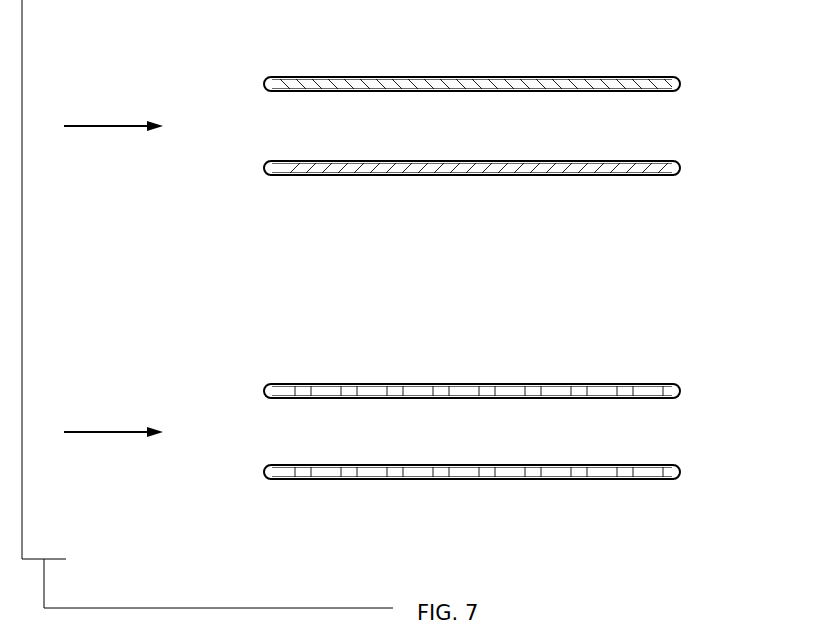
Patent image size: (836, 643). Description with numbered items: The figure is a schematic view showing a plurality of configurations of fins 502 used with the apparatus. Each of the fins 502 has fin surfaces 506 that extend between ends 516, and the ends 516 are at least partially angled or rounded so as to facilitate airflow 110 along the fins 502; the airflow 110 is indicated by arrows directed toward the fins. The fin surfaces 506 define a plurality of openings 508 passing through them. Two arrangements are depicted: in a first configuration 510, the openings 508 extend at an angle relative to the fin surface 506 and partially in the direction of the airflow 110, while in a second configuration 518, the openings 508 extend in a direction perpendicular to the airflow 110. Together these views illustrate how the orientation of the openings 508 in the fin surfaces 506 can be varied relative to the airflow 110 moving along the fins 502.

The airflow 110 is at (108, 125).
The fins 502 is at (553, 168).
The fin surfaces 506 is at (514, 88).
The openings 508 is at (390, 162).
The first configuration 510 is at (238, 70).
The ends 516 is at (262, 93).
The second configuration 518 is at (244, 381).